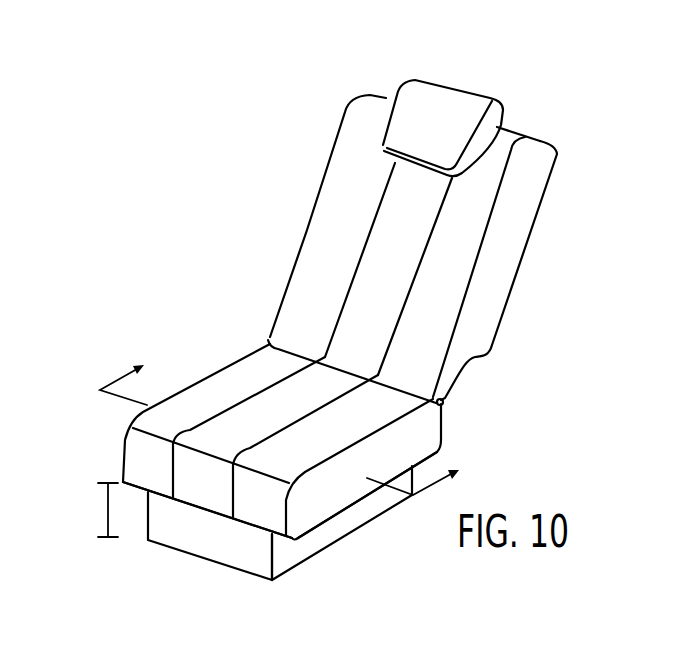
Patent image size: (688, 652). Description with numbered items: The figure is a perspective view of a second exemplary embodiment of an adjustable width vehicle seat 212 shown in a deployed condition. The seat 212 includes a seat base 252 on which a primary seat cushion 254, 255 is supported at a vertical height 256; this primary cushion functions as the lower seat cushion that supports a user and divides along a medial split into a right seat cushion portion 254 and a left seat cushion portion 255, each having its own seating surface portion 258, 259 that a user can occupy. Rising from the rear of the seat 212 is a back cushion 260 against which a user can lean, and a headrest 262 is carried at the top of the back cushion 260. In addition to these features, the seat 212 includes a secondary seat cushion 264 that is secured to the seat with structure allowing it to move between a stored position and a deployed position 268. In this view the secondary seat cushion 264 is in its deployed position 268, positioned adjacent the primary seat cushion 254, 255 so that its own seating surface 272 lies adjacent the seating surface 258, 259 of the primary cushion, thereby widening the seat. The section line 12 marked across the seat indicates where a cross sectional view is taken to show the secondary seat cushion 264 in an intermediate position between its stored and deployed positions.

The seat 212 is at (543, 130).
The back cushion 260 is at (390, 98).
The headrest 262 is at (457, 89).
The right seat cushion portion 254 is at (122, 438).
The seating surface portion 258 is at (222, 399).
The seating surface 272 is at (274, 420).
The seating surface portion 259 is at (324, 441).
The vertical height 256 is at (107, 507).
The seat base 252 is at (285, 560).
The left seat cushion portion 255 is at (252, 524).
The secondary seat cushion 264 is at (199, 494).
The deployed position 268 is at (387, 525).
The section line 12 is at (293, 420).